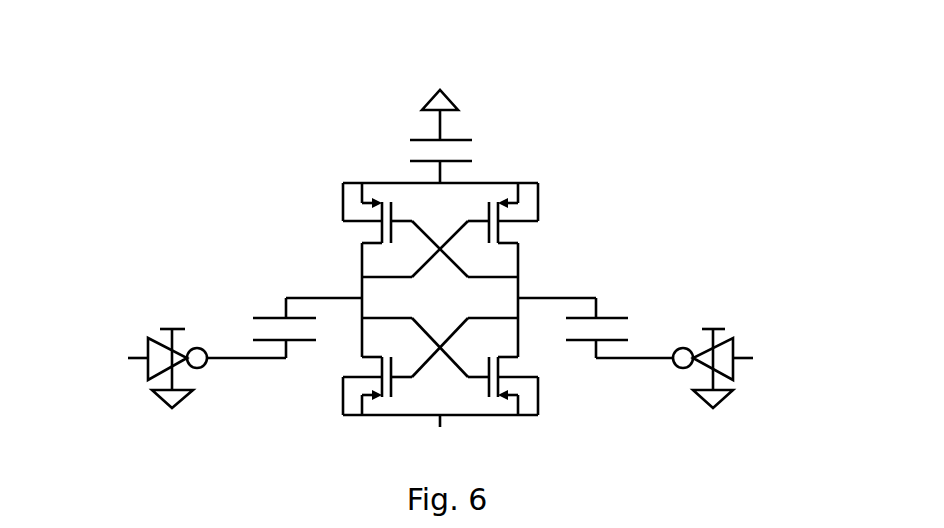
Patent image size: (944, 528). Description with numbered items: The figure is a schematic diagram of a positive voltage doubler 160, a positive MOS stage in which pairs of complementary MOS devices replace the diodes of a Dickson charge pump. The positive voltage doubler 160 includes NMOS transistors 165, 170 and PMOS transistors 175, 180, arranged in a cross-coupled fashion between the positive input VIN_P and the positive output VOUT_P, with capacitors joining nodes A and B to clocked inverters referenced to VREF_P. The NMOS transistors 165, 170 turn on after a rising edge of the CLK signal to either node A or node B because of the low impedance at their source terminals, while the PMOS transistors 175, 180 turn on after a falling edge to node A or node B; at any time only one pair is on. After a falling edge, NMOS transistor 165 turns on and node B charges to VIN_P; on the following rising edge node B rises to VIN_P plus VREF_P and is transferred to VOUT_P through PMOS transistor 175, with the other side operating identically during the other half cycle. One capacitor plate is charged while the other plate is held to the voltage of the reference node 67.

The positive voltage doubler 160 is at (384, 70).
The NMOS transistor 170 is at (326, 216).
The PMOS transistor 175 is at (558, 227).
The PMOS transistor 180 is at (326, 397).
The NMOS transistor 165 is at (556, 411).
The reference node 67 is at (456, 107).